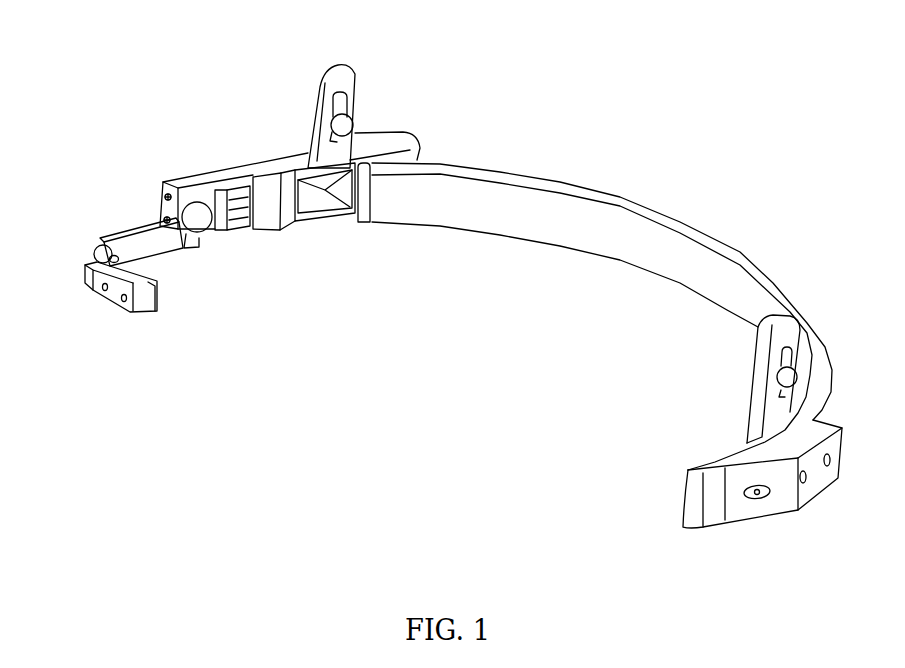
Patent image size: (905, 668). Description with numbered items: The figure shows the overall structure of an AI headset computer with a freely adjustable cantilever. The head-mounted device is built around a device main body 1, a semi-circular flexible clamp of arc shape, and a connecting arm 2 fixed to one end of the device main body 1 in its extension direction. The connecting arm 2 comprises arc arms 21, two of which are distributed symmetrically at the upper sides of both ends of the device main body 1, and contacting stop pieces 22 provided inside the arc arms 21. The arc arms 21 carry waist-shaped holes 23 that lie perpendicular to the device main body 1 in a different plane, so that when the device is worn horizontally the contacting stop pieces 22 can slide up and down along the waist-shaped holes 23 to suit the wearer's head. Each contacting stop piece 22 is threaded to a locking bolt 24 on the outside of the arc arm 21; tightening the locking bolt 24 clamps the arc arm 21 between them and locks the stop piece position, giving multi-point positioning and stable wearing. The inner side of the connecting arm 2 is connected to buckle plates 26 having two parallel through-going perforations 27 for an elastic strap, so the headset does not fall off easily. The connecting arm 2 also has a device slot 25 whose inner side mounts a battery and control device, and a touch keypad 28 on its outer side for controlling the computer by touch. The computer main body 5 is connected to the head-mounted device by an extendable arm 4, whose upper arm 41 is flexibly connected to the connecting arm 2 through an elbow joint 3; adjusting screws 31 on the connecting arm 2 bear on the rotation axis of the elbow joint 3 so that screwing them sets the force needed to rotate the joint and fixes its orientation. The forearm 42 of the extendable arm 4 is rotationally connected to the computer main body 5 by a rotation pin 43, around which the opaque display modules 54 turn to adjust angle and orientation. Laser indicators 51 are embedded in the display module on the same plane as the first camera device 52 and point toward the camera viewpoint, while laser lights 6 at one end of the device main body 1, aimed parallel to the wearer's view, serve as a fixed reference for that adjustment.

The device main body 1 is at (675, 217).
The connecting arm 2 is at (270, 149).
The arc arms 21 is at (350, 76).
The contacting stop pieces 22 is at (348, 123).
The waist-shaped holes 23 is at (787, 356).
The locking bolts 24 is at (790, 379).
The device slot 25 is at (313, 203).
The buckle plates 26 is at (228, 197).
The perforations 27 is at (240, 193).
The touch keypad 28 is at (180, 177).
The elbow joint 3 is at (198, 226).
The adjusting screws 31 is at (163, 220).
The extendable arm 4 is at (133, 239).
The upper arm 41 is at (185, 245).
The forearm 42 is at (94, 256).
The rotation pin 43 is at (111, 253).
The computer main body 5 is at (112, 293).
The laser indicators 51 is at (100, 285).
The first camera device 52 is at (118, 292).
The opaque display modules 54 is at (146, 284).
The laser lights 6 is at (757, 500).